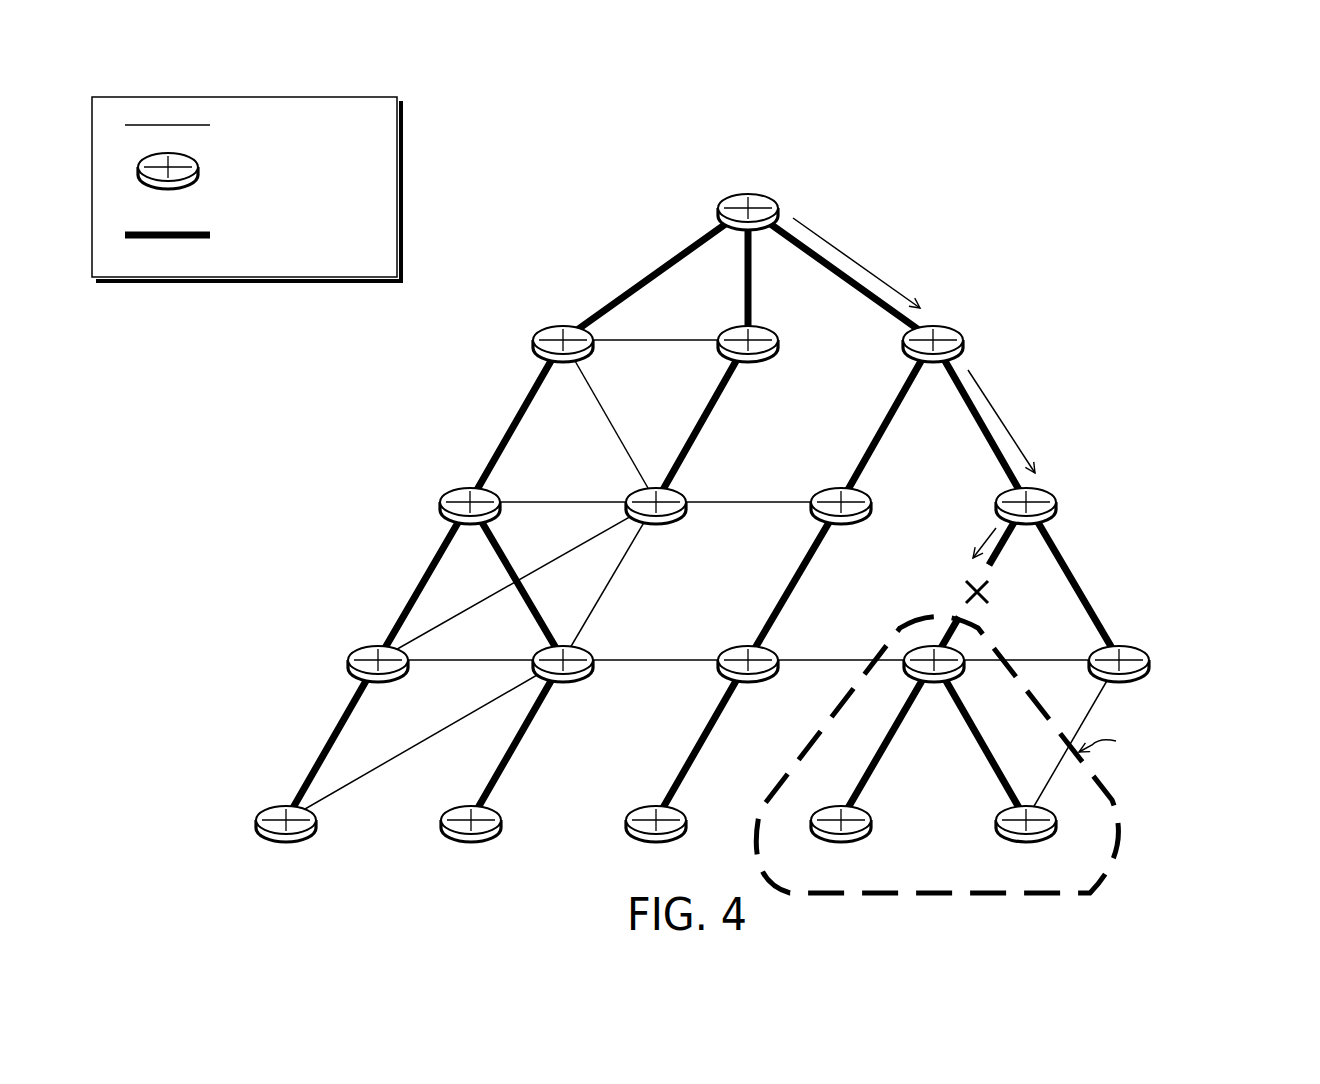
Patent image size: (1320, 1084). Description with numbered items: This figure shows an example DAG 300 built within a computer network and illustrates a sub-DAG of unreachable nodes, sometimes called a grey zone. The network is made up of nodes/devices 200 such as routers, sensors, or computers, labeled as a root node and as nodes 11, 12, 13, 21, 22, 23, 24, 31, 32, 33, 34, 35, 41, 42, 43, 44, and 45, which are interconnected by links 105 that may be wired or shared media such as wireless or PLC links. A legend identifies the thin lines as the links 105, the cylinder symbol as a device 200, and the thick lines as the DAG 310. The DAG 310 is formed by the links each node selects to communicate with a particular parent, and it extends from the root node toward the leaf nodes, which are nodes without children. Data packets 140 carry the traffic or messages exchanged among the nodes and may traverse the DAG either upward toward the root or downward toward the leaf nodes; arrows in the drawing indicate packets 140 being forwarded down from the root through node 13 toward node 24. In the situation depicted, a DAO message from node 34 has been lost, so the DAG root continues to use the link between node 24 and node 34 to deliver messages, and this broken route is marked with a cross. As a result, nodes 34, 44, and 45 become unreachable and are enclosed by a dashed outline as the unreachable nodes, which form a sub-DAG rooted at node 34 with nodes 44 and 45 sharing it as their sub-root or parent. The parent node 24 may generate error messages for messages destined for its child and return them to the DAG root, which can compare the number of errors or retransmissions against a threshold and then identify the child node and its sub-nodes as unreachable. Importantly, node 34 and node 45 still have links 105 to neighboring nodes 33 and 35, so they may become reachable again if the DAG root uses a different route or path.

The links 105 is at (237, 125).
The node/device 200 is at (252, 171).
The DAG 310 is at (228, 236).
The DAG 300 is at (1178, 152).
The data packets 140 is at (962, 262).
The node 11 is at (563, 364).
The node 12 is at (748, 364).
The node 13 is at (933, 364).
The node 21 is at (470, 526).
The node 22 is at (656, 526).
The node 23 is at (841, 526).
The node 24 is at (1026, 526).
The node 31 is at (378, 684).
The node 32 is at (563, 684).
The node 33 is at (748, 684).
The node 34 is at (934, 684).
The node 35 is at (1119, 684).
The node 41 is at (286, 844).
The node 42 is at (471, 844).
The node 43 is at (656, 844).
The node 44 is at (841, 844).
The node 45 is at (1026, 844).